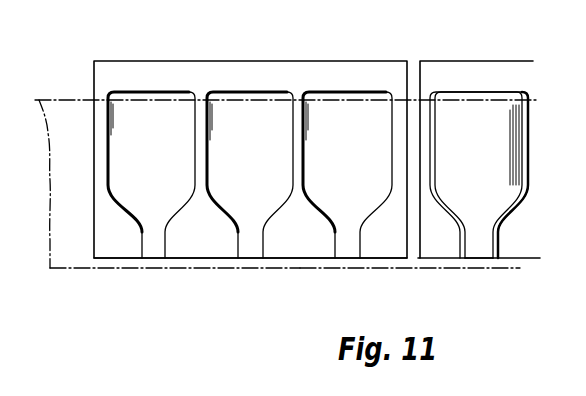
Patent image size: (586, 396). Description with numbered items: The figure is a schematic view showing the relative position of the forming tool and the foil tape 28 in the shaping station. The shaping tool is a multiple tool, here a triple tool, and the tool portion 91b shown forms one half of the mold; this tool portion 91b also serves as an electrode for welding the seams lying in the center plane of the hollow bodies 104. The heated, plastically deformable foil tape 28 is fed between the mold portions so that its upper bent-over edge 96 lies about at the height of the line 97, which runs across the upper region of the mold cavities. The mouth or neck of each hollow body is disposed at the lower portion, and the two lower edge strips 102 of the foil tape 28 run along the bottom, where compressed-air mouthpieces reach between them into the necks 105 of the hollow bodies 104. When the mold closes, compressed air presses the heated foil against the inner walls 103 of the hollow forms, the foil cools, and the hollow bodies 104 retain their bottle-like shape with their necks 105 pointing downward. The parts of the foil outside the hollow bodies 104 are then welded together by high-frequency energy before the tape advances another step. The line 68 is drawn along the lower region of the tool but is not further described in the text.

The tool portion 91b is at (383, 63).
The upper bent-over edge 96 is at (51, 100).
The foil tape 28 is at (50, 257).
The lower center line 68 is at (180, 270).
The lower edge strips 102 is at (412, 270).
The inner walls 103 is at (237, 115).
The line 97 is at (285, 98).
The hollow bodies 104 is at (477, 115).
The necks 105 is at (480, 245).